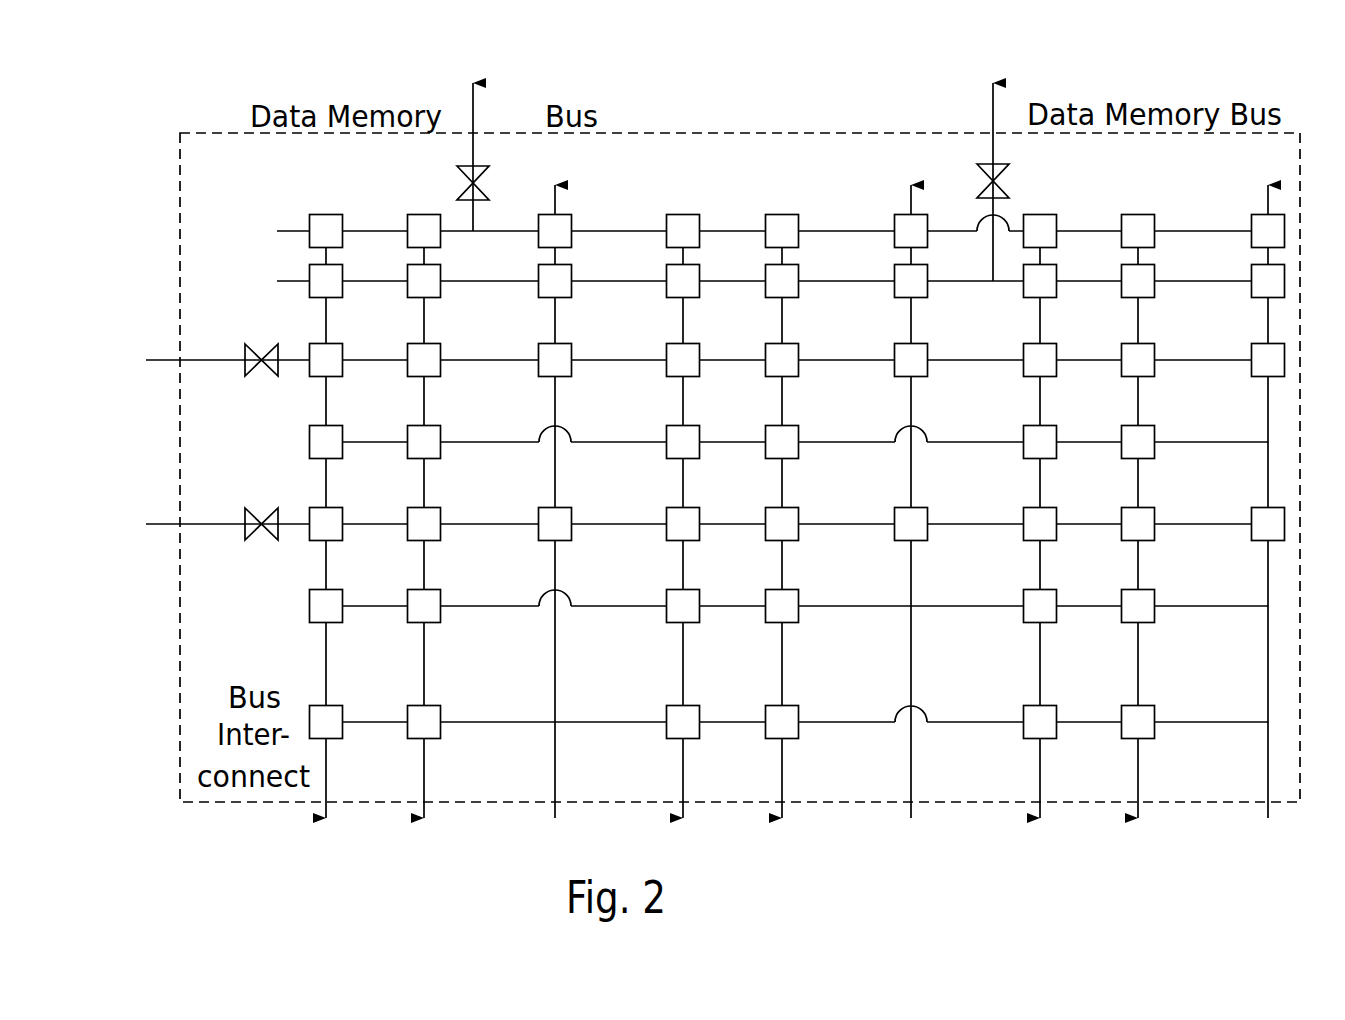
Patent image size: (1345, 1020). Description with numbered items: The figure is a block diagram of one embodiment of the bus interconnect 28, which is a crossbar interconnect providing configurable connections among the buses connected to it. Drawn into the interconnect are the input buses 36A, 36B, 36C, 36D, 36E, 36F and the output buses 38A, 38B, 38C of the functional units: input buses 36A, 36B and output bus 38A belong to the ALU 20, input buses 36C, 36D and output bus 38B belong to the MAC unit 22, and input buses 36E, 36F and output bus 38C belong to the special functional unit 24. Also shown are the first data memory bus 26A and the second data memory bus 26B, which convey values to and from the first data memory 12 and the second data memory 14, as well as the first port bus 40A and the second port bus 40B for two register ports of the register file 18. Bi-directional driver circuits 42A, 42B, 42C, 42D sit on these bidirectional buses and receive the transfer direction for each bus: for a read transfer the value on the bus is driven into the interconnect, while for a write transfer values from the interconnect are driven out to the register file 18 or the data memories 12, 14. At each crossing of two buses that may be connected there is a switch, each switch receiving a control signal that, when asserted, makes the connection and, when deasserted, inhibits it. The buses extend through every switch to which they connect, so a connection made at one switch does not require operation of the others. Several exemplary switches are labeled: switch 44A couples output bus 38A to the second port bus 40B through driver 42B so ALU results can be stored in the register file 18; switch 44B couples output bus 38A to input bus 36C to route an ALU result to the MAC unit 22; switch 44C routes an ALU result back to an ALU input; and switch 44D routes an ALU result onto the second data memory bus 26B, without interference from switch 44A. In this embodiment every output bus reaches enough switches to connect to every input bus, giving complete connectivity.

The first data memory 12 is at (476, 62).
The second data memory 14 is at (1090, 62).
The register file 18 is at (115, 353).
The arithmetic/logic unit (ALU) 20 is at (422, 866).
The multiply and accumulate (MAC) unit 22 is at (797, 866).
The special functional unit 24 is at (1136, 867).
The first data memory bus 26A is at (473, 142).
The second data memory bus 26B is at (993, 138).
The bus interconnect 28 is at (180, 690).
The input bus 36A is at (328, 753).
The input bus 36B is at (426, 753).
The input bus 36C is at (685, 753).
The input bus 36D is at (784, 753).
The input bus 36E is at (1070, 516).
The input bus 36F is at (1140, 753).
The output bus 38A is at (557, 753).
The output bus 38B is at (913, 753).
The output bus 38C is at (1268, 672).
The first port bus 40A is at (212, 360).
The second port bus 40B is at (195, 524).
The bi-directional driver circuit 42A is at (262, 364).
The bi-directional driver circuit 42B is at (262, 520).
The bi-directional driver circuit 42C is at (470, 184).
The bi-directional driver circuit 42D is at (990, 183).
The switch 44A is at (571, 541).
The switch 44B is at (683, 705).
The switch 44C is at (439, 705).
The switch 44D is at (571, 297).